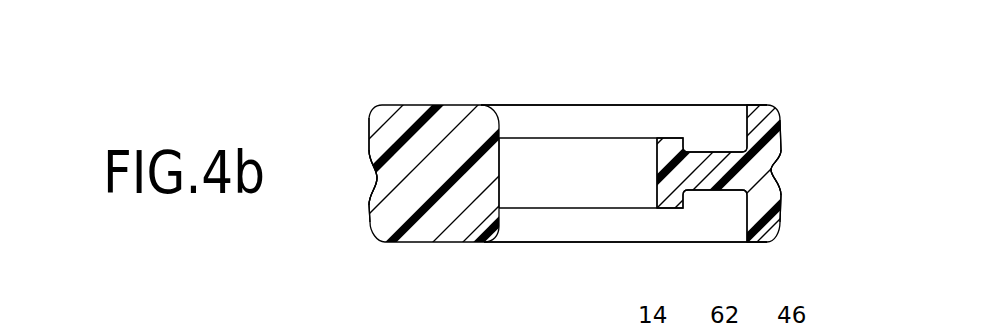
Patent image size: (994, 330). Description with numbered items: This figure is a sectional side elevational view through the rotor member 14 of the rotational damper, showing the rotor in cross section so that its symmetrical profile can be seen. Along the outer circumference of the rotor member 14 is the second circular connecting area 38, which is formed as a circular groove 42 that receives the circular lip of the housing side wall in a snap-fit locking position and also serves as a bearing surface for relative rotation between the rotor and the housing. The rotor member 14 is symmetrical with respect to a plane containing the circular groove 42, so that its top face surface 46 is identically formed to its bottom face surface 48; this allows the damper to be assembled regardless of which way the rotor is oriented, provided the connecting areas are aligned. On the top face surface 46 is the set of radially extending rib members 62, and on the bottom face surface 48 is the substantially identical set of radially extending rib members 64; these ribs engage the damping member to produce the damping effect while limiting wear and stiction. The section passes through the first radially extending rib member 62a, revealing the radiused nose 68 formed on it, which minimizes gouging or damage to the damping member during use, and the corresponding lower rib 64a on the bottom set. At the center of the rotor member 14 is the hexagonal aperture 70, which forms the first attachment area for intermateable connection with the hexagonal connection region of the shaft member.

The rotor member 14 is at (488, 99).
The second circular connecting area 38 is at (357, 157).
The circular groove 42 is at (377, 189).
The top face surface 46 is at (656, 126).
The bottom face surface 48 is at (555, 223).
The set of radially extending rib members 62 is at (419, 173).
The first radially extending rib member 62a is at (432, 107).
The set of radially extending rib members 64 is at (468, 256).
The lower-left reinforcing band 64a is at (397, 245).
The radiused nose 68 is at (511, 112).
The hexagonal aperture 70 is at (642, 181).